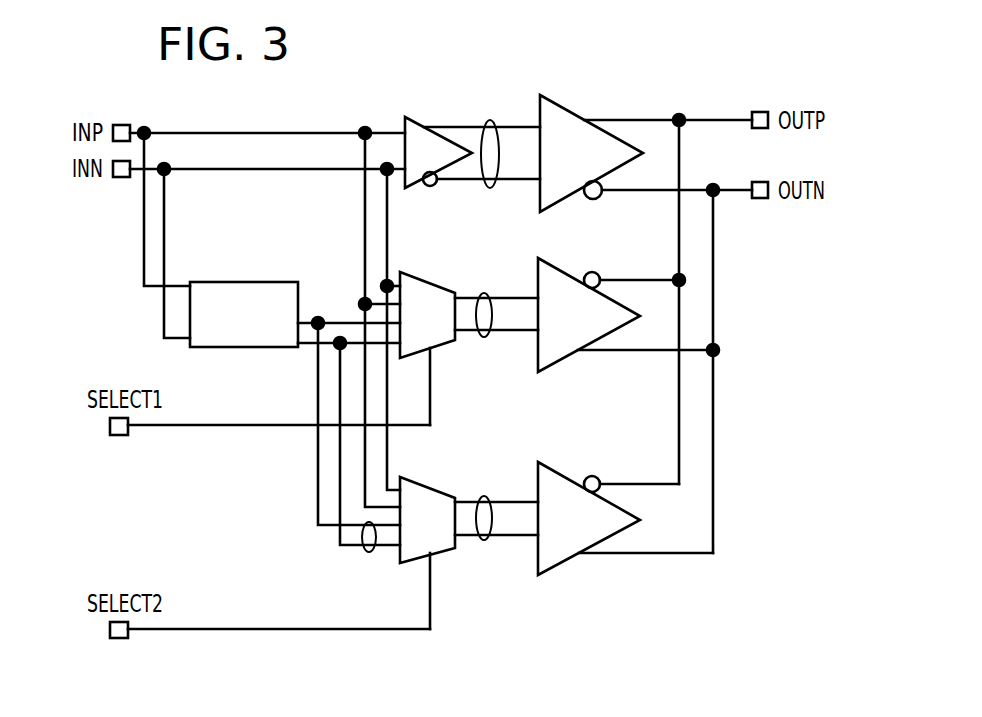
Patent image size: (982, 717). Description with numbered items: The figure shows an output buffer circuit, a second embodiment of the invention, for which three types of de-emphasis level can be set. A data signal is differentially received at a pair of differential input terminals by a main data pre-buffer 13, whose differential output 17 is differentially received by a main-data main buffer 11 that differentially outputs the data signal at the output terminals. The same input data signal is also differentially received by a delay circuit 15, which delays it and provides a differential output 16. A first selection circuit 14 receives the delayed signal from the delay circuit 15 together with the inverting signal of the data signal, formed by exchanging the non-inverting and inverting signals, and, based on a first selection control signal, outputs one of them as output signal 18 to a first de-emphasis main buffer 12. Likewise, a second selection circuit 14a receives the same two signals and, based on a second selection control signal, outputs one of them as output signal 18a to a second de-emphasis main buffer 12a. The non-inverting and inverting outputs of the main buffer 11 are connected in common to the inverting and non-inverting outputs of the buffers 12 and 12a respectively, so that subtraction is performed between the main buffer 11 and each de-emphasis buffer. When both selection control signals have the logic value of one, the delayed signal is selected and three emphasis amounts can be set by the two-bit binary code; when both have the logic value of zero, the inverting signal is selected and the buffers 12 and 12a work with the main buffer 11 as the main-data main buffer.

The main-data main buffer 11 is at (577, 105).
The first de-emphasis main buffer 12 is at (568, 272).
The second de-emphasis main buffer 12a is at (565, 478).
The main data pre-buffer 13 is at (410, 118).
The first selection circuit 14 is at (428, 282).
The second selection circuit 14a is at (428, 487).
The delay circuit 15 is at (233, 282).
The differential output of delay circuit 16 is at (368, 555).
The differential output of main data pre-buffer 17 is at (490, 120).
The output signal of selection circuit 18 is at (484, 340).
The output signal of second selection circuit 18a is at (484, 545).